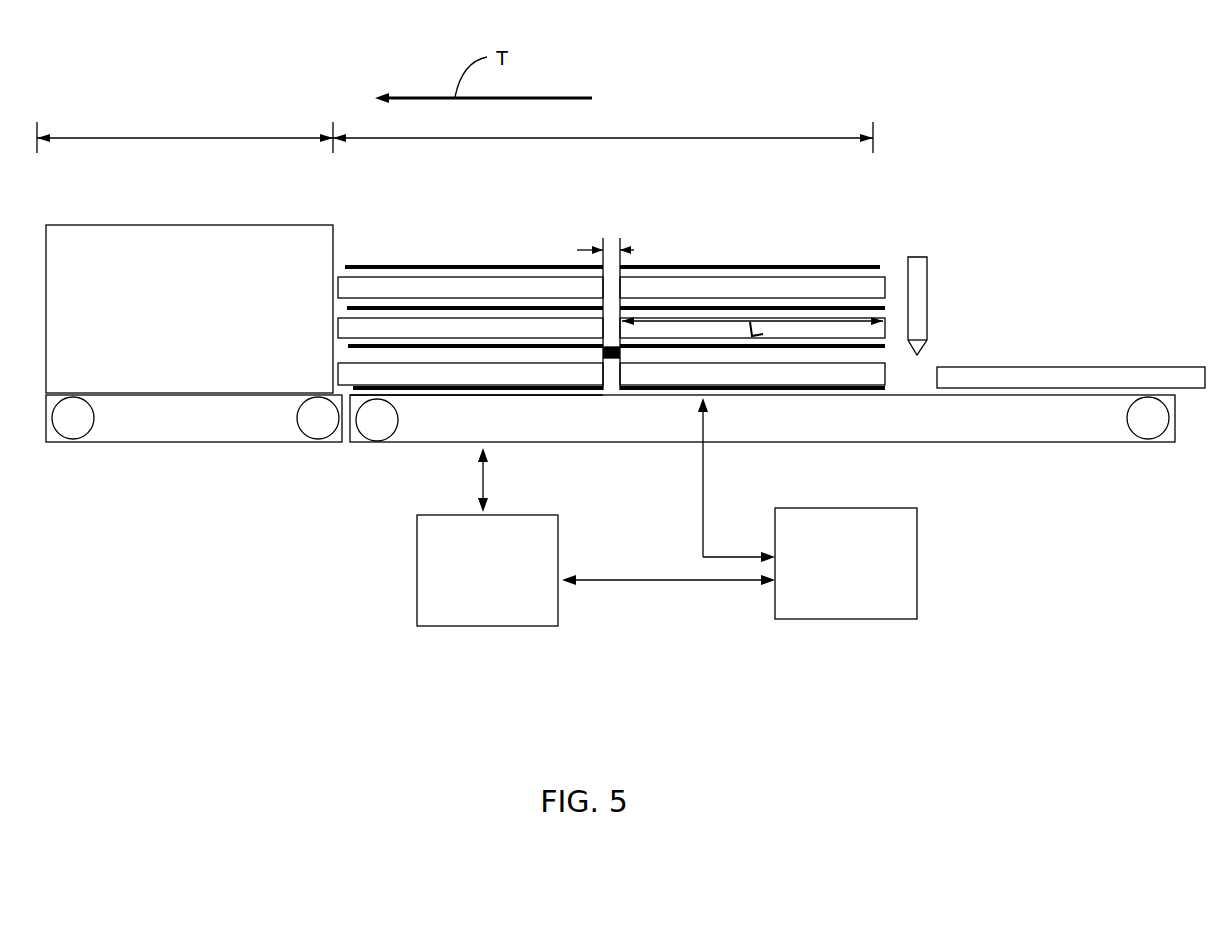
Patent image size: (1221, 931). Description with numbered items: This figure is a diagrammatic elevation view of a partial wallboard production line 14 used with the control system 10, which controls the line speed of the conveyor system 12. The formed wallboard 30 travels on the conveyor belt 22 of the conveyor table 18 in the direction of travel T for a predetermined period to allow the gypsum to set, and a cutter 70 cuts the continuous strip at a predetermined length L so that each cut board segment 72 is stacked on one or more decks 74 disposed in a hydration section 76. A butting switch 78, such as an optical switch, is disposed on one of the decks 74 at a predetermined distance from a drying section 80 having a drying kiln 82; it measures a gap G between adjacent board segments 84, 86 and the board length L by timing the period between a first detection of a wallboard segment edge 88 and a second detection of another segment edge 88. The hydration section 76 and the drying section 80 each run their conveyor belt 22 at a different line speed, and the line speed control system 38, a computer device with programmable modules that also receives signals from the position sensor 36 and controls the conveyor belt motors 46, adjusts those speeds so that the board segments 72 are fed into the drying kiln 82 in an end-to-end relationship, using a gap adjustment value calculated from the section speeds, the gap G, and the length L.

The control system 10 is at (993, 200).
The conveyor system 12 is at (475, 645).
The wallboard production line 14 is at (420, 398).
The conveyor table 18 is at (975, 442).
The conveyor belt 22 is at (210, 395).
The wallboard 30 is at (1053, 365).
The position sensor 36 is at (698, 243).
The line speed control system 38 is at (823, 640).
The conveyor belt motors 46 is at (377, 443).
The cutter 70 is at (928, 312).
The board segment 72 is at (437, 290).
The deck 74 is at (492, 307).
The hydration section 76 is at (677, 137).
The butting switch 78 is at (610, 345).
The drying section 80 is at (162, 137).
The drying kiln 82 is at (189, 309).
The adjacent board segment 84 is at (560, 330).
The adjacent board segment 86 is at (655, 330).
The wallboard segment edge 88 is at (345, 287).